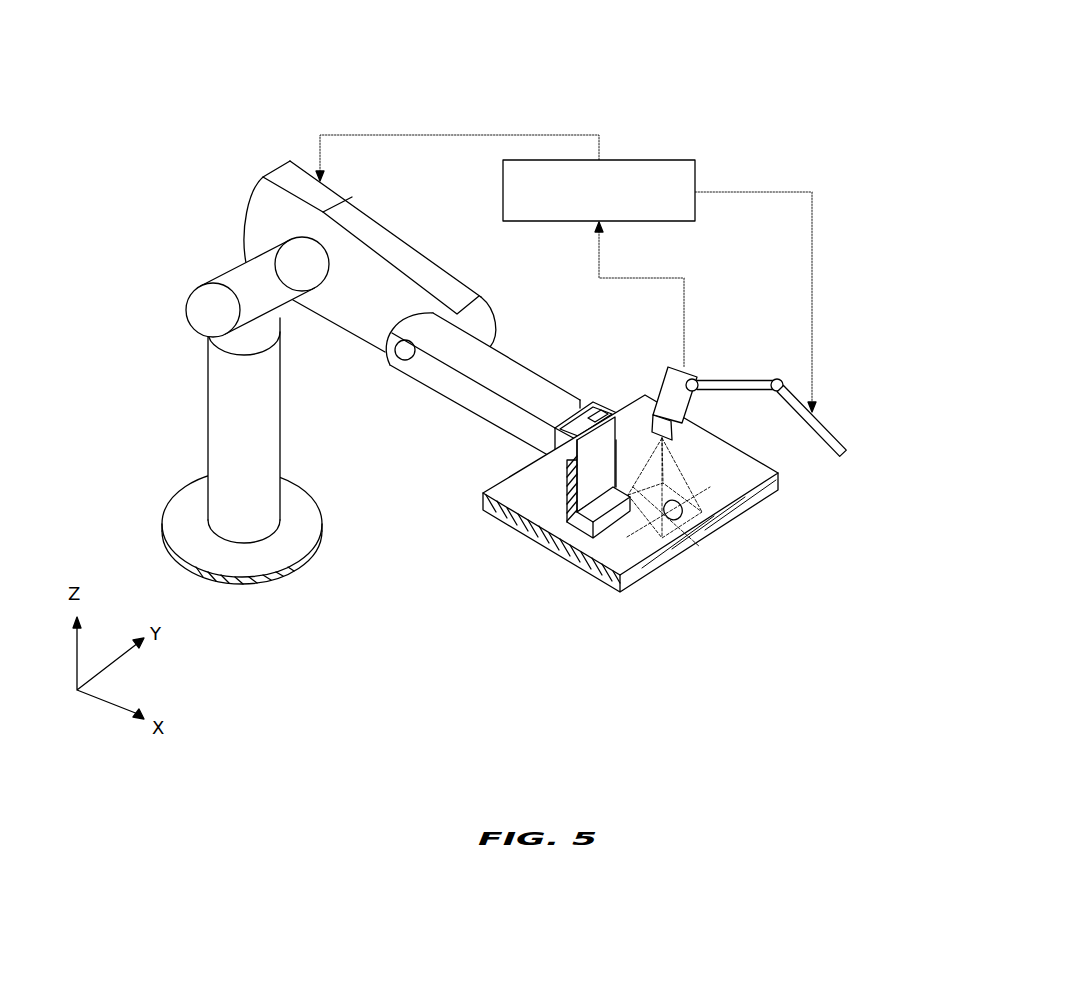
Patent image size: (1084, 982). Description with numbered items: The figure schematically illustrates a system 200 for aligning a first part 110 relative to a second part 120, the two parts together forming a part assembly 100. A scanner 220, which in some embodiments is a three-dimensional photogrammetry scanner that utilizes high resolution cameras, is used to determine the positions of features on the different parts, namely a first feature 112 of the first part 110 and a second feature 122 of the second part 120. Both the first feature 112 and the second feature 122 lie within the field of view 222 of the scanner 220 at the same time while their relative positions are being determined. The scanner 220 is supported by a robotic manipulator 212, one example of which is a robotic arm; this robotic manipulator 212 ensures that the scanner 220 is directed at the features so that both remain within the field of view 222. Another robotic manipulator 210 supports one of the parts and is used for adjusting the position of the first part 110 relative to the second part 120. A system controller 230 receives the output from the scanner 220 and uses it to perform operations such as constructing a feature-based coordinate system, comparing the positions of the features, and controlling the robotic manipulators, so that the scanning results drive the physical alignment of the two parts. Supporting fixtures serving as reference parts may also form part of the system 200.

The part assembly 100 is at (603, 615).
The first part 110 is at (592, 534).
The first feature 112 is at (597, 528).
The second part 120 is at (642, 578).
The second feature 122 is at (679, 520).
The system 200 is at (681, 112).
The robotic manipulator 210 is at (270, 167).
The robotic manipulator 212 is at (840, 441).
The scanner 220 is at (697, 379).
The field of view 222 is at (722, 516).
The system controller 230 is at (599, 190).